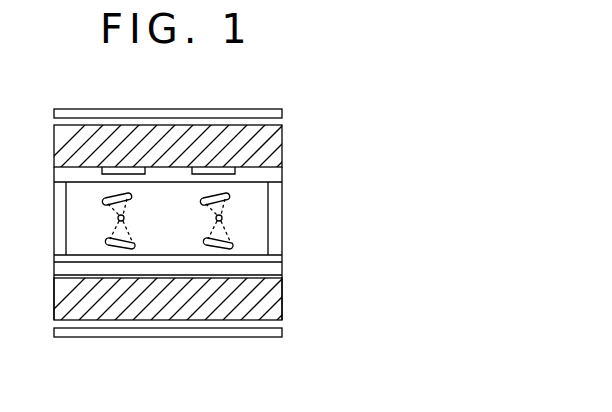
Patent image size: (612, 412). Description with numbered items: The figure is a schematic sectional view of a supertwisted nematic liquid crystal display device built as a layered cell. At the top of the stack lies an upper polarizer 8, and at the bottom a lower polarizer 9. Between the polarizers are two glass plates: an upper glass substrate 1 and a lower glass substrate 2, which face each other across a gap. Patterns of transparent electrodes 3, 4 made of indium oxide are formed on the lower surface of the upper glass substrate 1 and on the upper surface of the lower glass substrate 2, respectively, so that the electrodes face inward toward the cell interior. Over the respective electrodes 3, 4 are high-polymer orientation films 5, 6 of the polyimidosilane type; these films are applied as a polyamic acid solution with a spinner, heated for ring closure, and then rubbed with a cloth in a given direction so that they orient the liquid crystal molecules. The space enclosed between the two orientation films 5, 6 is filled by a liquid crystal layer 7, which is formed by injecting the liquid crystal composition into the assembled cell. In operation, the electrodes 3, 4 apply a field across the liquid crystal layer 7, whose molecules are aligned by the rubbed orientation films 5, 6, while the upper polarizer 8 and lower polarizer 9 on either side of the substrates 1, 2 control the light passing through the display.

The upper glass substrate 1 is at (270, 142).
The lower glass substrate 2 is at (272, 300).
The transparent electrode 3 is at (228, 167).
The transparent electrode 4 is at (275, 273).
The high-polymer orientation film 5 is at (277, 175).
The high-polymer orientation film 6 is at (282, 257).
The liquid crystal layer 7 is at (260, 219).
The upper polarizer 8 is at (282, 113).
The lower polarizer 9 is at (282, 335).